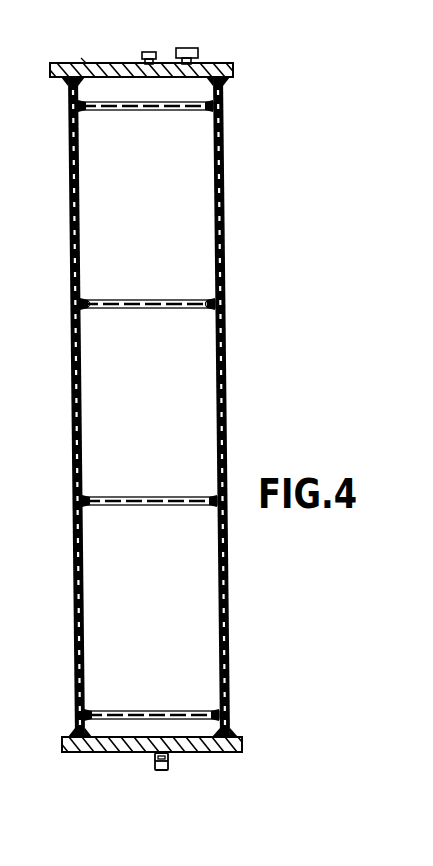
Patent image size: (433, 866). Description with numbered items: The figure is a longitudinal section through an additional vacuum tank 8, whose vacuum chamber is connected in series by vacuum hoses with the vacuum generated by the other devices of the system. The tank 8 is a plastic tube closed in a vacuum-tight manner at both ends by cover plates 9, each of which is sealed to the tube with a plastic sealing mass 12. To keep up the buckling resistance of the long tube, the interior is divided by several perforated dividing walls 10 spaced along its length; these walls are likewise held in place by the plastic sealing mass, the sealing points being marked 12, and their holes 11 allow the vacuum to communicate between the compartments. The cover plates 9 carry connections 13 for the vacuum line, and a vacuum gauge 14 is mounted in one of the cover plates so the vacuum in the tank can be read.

The additional vacuum tank 8 is at (240, 360).
The cover plate 9 is at (84, 63).
The perforated dividing wall 10 is at (145, 300).
The holes 11 is at (164, 308).
The plastic sealing mass 12 is at (224, 78).
The connection for the vacuum line 13 is at (143, 53).
The vacuum gauge 14 is at (189, 50).